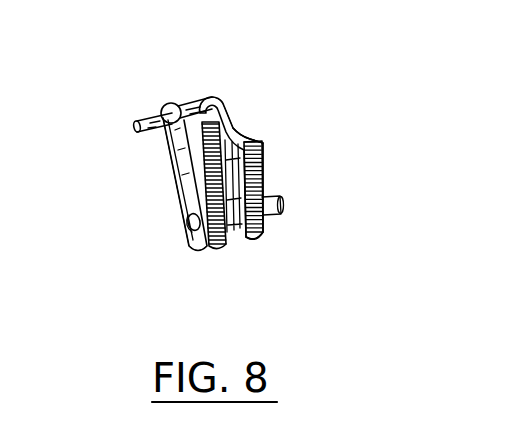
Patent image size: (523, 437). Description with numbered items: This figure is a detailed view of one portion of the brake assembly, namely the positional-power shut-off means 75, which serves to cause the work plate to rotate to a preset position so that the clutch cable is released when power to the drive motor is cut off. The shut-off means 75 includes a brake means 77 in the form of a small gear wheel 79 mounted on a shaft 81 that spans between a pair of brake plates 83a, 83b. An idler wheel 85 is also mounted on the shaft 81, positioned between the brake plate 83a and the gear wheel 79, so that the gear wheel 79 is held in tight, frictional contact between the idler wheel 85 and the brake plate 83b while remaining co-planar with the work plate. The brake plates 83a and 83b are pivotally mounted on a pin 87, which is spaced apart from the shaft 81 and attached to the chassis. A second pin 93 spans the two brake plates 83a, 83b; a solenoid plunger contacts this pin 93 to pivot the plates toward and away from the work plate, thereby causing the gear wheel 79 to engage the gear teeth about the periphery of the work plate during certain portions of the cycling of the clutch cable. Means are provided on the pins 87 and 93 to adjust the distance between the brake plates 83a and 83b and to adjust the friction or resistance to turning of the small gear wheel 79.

The positional-power shut-off means 75 is at (292, 254).
The brake means 77 is at (250, 125).
The gear wheel 79 is at (246, 143).
The shaft 81 is at (188, 167).
The brake plate 83a is at (185, 211).
The brake plate 83b is at (253, 183).
The idler wheel 85 is at (170, 134).
The pin 87 is at (185, 235).
The pin 93 is at (193, 100).